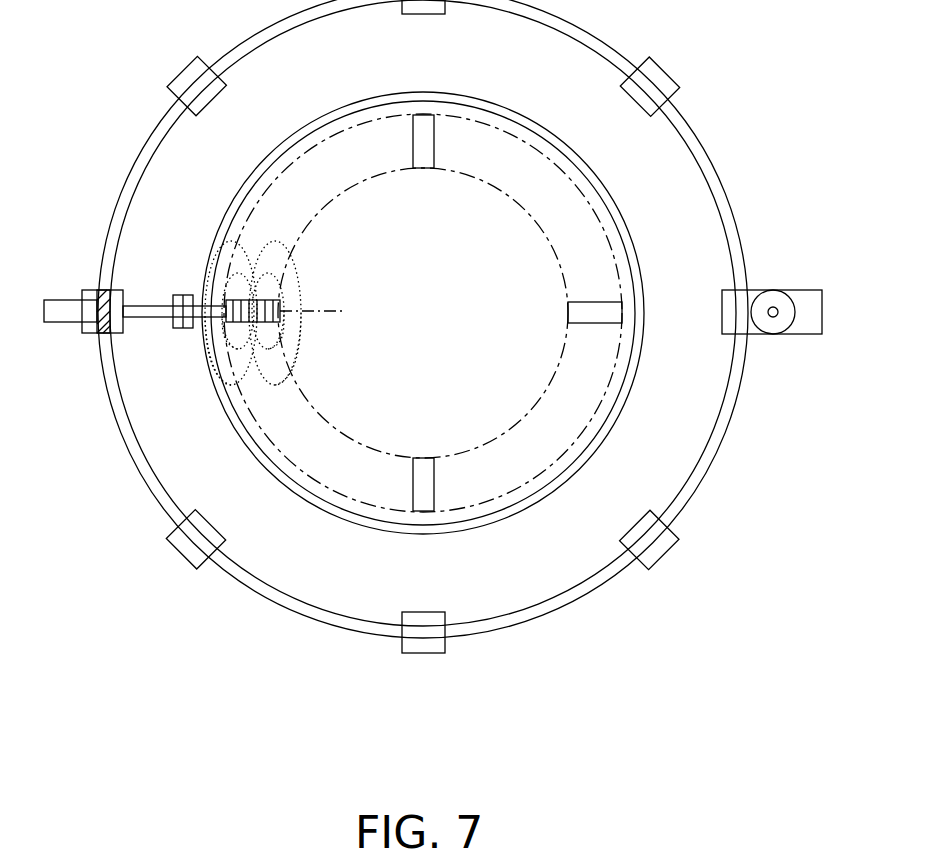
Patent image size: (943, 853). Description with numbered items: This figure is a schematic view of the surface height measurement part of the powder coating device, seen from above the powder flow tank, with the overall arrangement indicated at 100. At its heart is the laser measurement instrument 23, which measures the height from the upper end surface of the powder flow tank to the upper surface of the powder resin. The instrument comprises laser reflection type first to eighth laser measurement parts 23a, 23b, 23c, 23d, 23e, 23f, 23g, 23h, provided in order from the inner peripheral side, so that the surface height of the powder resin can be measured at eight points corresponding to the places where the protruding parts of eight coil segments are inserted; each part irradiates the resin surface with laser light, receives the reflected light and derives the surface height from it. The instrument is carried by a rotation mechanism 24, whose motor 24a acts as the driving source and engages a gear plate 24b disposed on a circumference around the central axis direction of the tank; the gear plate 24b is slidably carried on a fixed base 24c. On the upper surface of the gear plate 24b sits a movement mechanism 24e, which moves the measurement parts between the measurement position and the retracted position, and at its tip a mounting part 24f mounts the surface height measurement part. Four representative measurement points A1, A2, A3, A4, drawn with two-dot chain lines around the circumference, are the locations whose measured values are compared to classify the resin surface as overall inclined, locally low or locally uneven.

The imaging device 100 is at (222, 191).
The laser measurement instrument 23 is at (283, 315).
The first laser measurement part 23a is at (280, 292).
The second laser measurement part 23b is at (278, 335).
The third laser measurement part 23c is at (276, 270).
The fourth laser measurement part 23d is at (285, 375).
The fifth laser measurement part 23e is at (235, 236).
The sixth laser measurement part 23f is at (230, 388).
The seventh laser measurement part 23g is at (228, 272).
The eighth laser measurement part 23h is at (227, 348).
The rotation mechanism 24 is at (140, 327).
The motor 24a is at (772, 325).
The gear plate 24b is at (703, 462).
The fixed base 24c is at (424, 652).
The movement mechanism 24e is at (62, 303).
The mounting part 24f is at (158, 308).
The measurement point A1 is at (300, 307).
The measurement point A2 is at (430, 160).
The measurement point A3 is at (600, 323).
The measurement point A4 is at (440, 480).